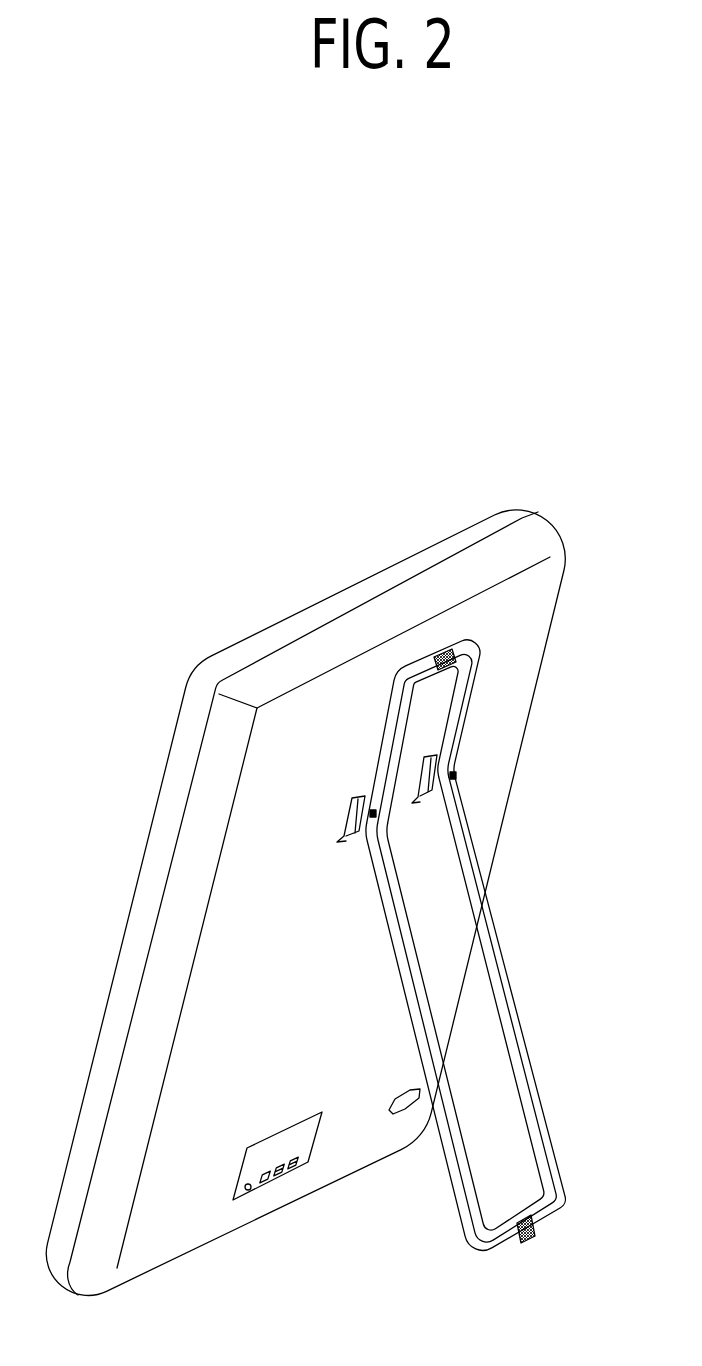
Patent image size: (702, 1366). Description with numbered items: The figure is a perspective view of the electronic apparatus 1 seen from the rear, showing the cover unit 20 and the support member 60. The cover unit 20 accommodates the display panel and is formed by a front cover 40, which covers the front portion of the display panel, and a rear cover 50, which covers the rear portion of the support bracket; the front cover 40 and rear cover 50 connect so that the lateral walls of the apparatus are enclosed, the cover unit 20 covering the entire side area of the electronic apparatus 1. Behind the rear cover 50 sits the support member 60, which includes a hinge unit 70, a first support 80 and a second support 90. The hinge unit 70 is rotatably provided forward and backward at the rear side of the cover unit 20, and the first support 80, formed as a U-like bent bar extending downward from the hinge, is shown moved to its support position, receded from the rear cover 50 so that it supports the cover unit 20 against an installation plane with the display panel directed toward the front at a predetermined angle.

The electronic apparatus 1 is at (627, 440).
The cover unit 20 is at (338, 474).
The front cover 40 is at (400, 565).
The rear cover 50 is at (315, 643).
The support member 60 is at (647, 705).
The hinge unit 70 is at (456, 775).
The first support 80 is at (523, 1036).
The second support 90 is at (470, 700).